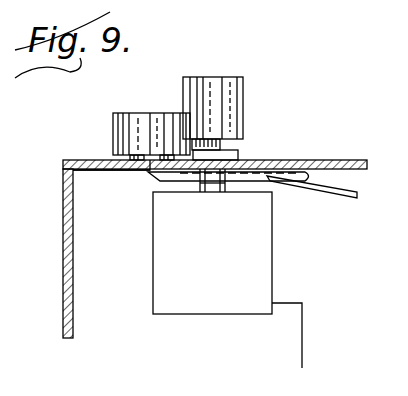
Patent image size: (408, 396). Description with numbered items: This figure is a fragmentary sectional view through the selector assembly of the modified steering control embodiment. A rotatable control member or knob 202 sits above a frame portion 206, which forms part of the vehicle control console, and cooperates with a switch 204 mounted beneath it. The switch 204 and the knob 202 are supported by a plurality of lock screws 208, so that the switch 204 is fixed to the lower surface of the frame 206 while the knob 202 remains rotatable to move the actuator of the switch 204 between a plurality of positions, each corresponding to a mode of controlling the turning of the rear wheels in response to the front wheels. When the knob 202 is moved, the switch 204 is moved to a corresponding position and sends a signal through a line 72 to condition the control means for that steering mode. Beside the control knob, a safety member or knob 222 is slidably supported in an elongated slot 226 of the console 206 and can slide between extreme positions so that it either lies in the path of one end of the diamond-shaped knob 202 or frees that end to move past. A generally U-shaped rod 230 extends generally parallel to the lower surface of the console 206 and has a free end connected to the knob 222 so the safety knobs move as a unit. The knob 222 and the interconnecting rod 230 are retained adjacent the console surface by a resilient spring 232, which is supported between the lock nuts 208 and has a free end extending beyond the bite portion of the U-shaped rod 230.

The line 72 is at (302, 338).
The knob 202 is at (213, 85).
The switch 204 is at (204, 316).
The frame portion 206 is at (337, 160).
The lock screws 208 is at (227, 183).
The knob 222 is at (130, 128).
The slot 226 is at (155, 162).
The U-shaped rod 230 is at (273, 182).
The resilient spring 232 is at (355, 200).